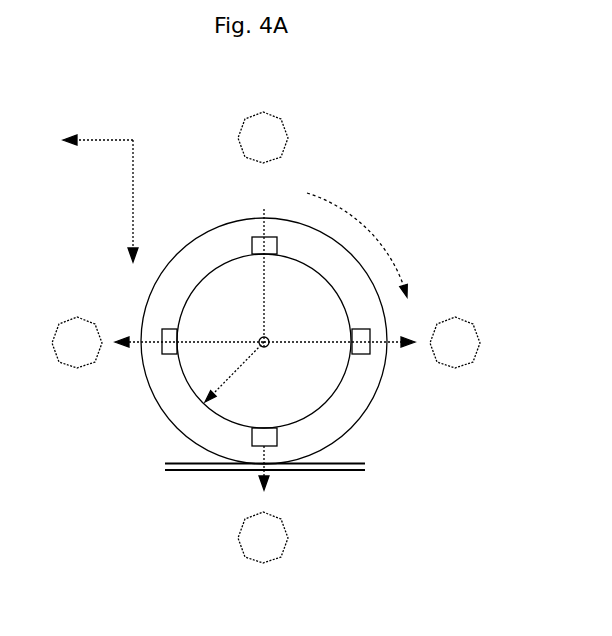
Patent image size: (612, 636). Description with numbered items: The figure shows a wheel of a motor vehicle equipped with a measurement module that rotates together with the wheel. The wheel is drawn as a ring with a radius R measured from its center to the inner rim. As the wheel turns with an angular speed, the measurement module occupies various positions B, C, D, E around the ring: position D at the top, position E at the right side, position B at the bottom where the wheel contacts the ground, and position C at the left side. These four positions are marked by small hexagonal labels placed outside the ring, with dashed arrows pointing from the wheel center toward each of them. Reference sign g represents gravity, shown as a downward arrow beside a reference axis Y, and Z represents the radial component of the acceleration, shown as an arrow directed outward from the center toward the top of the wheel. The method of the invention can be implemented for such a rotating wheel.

The measurement module position B is at (263, 504).
The measurement module position C is at (158, 342).
The measurement module position D is at (263, 137).
The measurement module position E is at (372, 342).
The radius R is at (234, 372).
The axis Y is at (98, 124).
The radial component of the acceleration Z is at (264, 258).
The gravity g is at (118, 201).